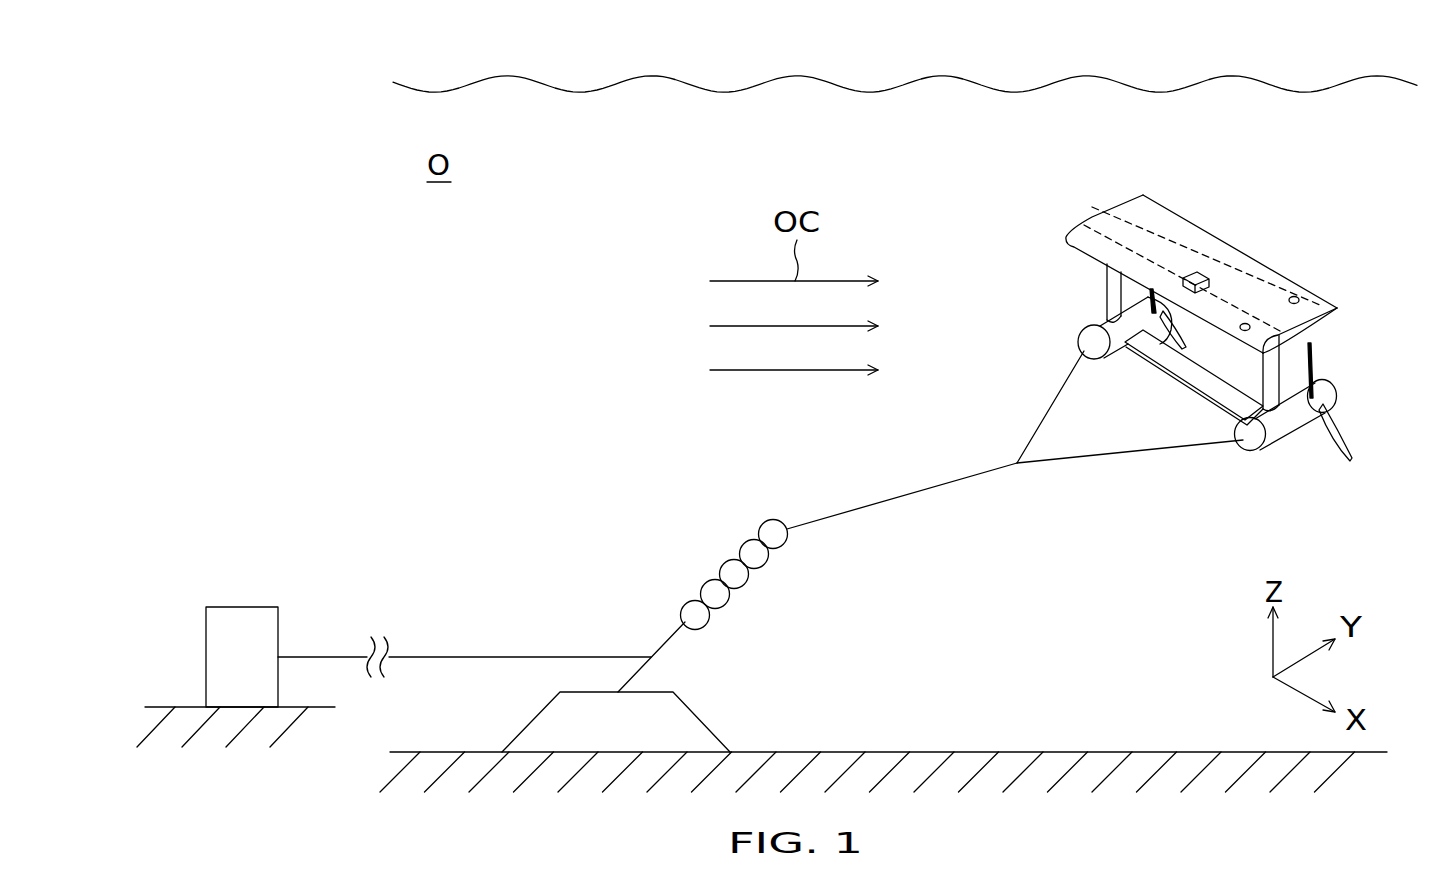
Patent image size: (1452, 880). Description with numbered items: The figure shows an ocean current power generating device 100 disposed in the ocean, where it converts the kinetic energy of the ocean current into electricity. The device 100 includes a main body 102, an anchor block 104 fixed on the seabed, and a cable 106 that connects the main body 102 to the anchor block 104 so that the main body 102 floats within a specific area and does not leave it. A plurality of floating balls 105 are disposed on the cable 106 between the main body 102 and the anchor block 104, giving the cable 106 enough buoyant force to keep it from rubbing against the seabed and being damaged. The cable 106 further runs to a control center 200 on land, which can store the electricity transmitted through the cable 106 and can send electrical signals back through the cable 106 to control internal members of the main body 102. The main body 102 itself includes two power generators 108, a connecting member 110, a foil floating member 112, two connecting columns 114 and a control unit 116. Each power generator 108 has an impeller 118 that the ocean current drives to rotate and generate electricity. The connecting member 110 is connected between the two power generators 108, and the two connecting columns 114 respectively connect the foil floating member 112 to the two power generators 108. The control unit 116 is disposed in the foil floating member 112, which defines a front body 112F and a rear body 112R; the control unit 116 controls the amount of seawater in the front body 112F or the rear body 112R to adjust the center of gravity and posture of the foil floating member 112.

The ocean current power generating device 100 is at (1375, 173).
The main body 102 is at (1298, 287).
The anchor block 104 is at (680, 727).
The floating balls 105 is at (733, 572).
The cable 106 is at (515, 657).
The power generators 108 is at (1103, 325).
The connecting member 110 is at (1192, 365).
The foil floating member 112 is at (1248, 290).
The front body 112F is at (1088, 239).
The rear body 112R is at (1157, 217).
The connecting columns 114 is at (1112, 297).
The control unit 116 is at (1193, 274).
The impeller 118 is at (1320, 397).
The control center 200 is at (243, 626).